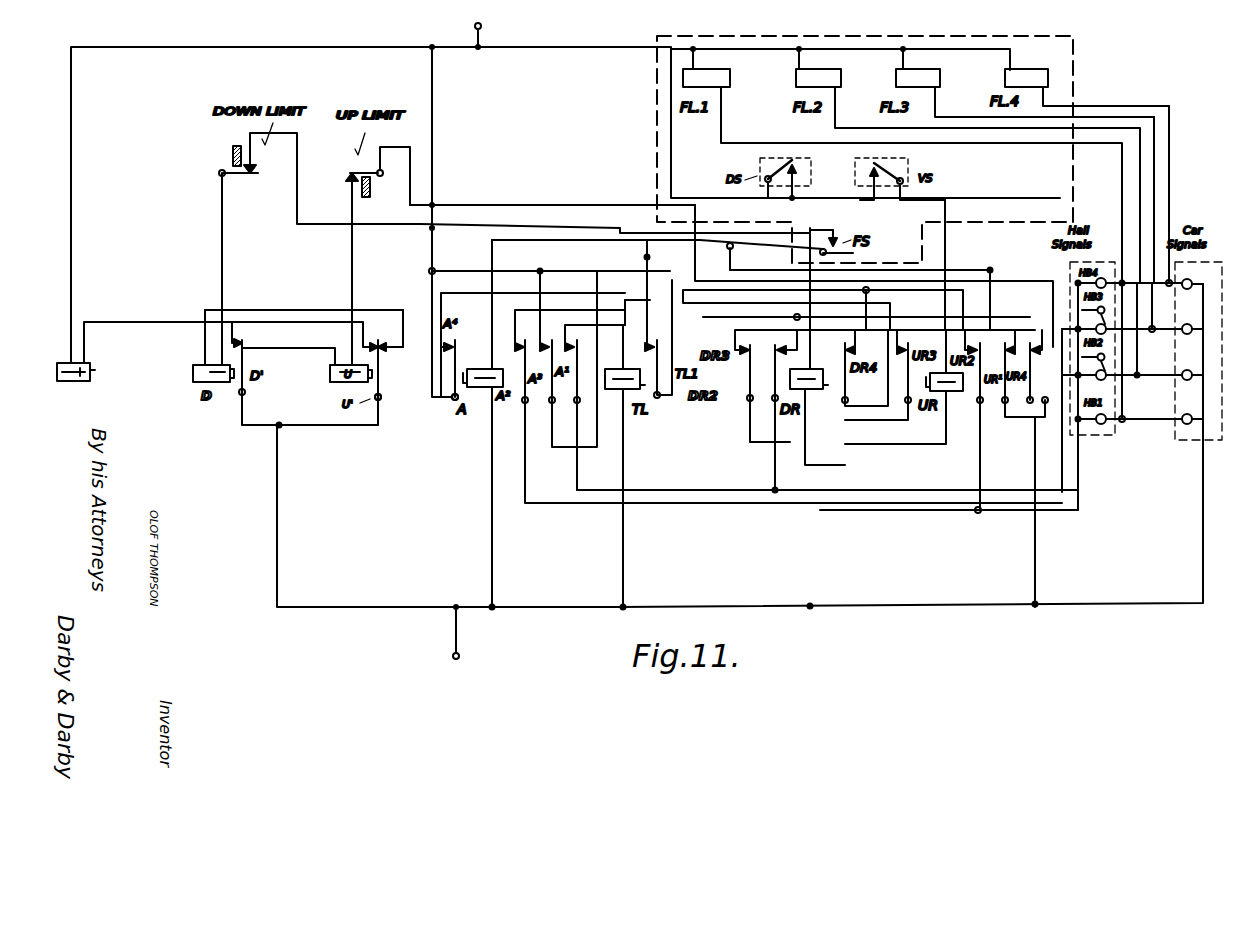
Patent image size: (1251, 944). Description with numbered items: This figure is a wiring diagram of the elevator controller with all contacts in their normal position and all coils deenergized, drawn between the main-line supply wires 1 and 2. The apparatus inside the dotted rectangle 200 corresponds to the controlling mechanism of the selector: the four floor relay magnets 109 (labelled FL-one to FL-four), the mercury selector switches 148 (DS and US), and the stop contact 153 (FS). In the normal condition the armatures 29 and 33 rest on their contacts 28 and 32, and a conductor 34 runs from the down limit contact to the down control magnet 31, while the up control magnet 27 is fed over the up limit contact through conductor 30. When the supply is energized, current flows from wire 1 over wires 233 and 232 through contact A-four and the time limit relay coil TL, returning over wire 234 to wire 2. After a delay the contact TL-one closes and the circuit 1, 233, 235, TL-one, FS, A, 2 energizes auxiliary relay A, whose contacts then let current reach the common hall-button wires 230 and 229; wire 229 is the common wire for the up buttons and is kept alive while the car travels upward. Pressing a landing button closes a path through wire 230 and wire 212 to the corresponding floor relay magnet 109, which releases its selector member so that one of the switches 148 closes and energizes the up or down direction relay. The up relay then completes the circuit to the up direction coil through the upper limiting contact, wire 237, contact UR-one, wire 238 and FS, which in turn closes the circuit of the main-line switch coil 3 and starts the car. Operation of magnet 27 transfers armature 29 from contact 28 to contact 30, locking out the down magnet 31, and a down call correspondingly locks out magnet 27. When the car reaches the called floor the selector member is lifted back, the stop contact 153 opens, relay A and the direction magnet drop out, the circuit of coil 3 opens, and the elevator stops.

The supply wire 1 is at (472, 36).
The supply wire 2 is at (452, 631).
The main-line switch coil 3 is at (69, 383).
The up control magnet 27 is at (332, 382).
The contact 28 is at (386, 345).
The armature 29 is at (382, 398).
The contact 30 is at (360, 344).
The down control magnet 31 is at (193, 372).
The contact 32 is at (261, 332).
The armature 33 is at (258, 350).
The down limit conductor 34 is at (237, 338).
The floor relay magnet 109 is at (723, 80).
The selector switch 148 is at (760, 166).
The stop contact 153 is at (852, 260).
The dotted rectangle 200 is at (891, 149).
The wire 212 is at (1158, 166).
The common wire 229 is at (1077, 486).
The common wire 230 is at (914, 502).
The wire 232 is at (386, 356).
The wire 233 is at (437, 111).
The wire 234 is at (624, 568).
The wire 235 is at (523, 264).
The wire 237 is at (556, 197).
The wire 238 is at (760, 268).